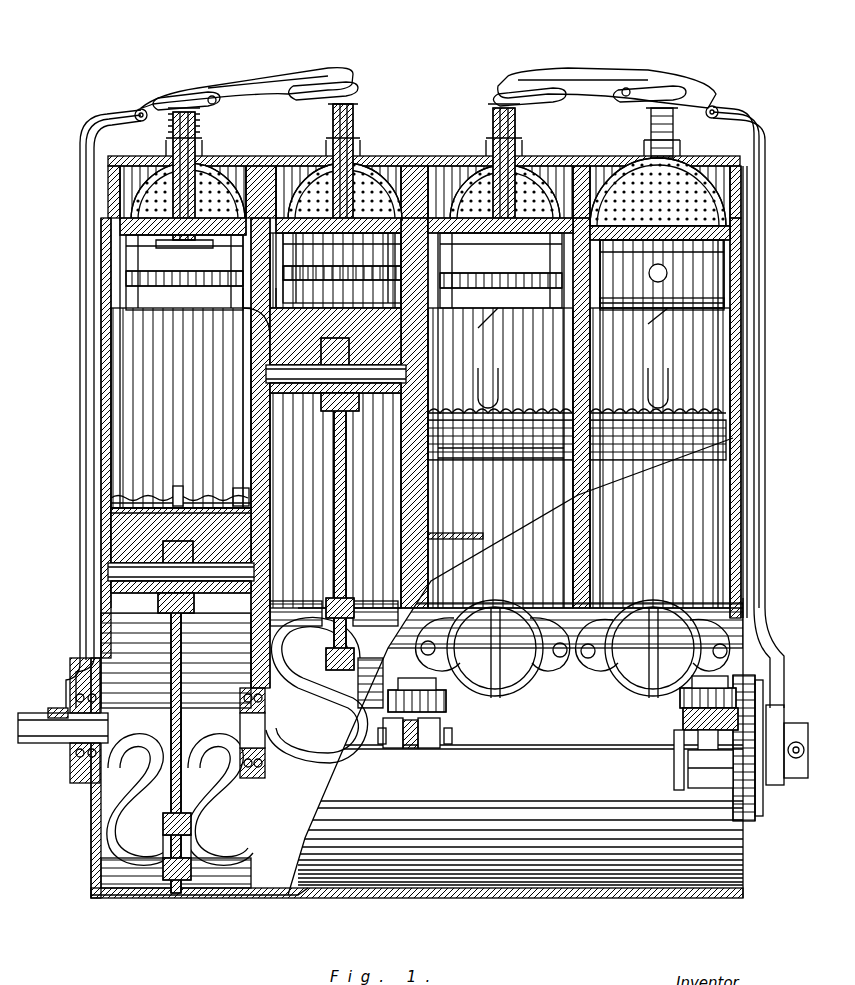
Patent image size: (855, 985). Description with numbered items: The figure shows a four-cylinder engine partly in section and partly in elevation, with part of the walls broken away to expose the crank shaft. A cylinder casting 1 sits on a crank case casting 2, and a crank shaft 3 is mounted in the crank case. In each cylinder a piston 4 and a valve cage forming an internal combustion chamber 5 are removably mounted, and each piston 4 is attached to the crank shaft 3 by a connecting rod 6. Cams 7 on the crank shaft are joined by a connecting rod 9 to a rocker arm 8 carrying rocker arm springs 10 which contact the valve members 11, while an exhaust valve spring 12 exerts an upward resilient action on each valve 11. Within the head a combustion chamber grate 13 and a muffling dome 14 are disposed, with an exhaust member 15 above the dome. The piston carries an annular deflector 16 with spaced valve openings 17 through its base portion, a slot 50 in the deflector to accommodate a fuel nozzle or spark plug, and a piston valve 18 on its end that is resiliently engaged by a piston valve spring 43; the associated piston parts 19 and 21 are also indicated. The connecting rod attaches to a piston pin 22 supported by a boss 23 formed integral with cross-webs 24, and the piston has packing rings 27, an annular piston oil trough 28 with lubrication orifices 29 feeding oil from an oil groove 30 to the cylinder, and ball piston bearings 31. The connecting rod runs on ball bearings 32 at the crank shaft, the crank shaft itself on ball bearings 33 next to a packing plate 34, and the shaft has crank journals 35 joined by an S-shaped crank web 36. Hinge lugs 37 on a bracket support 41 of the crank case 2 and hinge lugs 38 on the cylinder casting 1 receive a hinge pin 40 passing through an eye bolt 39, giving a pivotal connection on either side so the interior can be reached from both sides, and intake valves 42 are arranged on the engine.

The cylinder casting 1 is at (93, 334).
The crank case casting 2 is at (178, 78).
The crank shaft 3 is at (372, 640).
The piston 4 is at (200, 392).
The internal combustion chamber 5 is at (182, 282).
The connecting rod 6 is at (175, 606).
The cam 7 is at (30, 740).
The rocker arm 8 is at (222, 68).
The connecting rod 9 is at (72, 374).
The rocker arm spring 10 is at (338, 78).
The valve member 11 is at (172, 236).
The exhaust valve spring 12 is at (163, 122).
The combustion chamber grate 13 is at (240, 292).
The muffling dome 14 is at (440, 160).
The exhaust member 15 is at (300, 158).
The annular deflector 16 is at (243, 308).
The valve opening 17 is at (103, 500).
The piston valve 18 is at (238, 380).
The plate 19 is at (103, 505).
The packing ring 21 is at (100, 490).
The piston pin 22 is at (258, 366).
The boss 23 is at (262, 380).
The cross-web 24 is at (262, 330).
The packing ring 27 is at (462, 440).
The annular piston oil trough 28 is at (232, 480).
The lubrication orifice 29 is at (440, 526).
The oil groove 30 is at (460, 520).
The ball piston bearing 31 is at (150, 595).
The ball bearing 32 is at (346, 600).
The ball bearing 33 is at (258, 752).
The packing plate 34 is at (45, 660).
The crank journal 35 is at (25, 705).
The crank web 36 is at (275, 752).
The hinge lug 37 is at (376, 742).
The hinge lug 38 is at (440, 708).
The eye bolt 39 is at (404, 745).
The hinge pin 40 is at (668, 724).
The bracket support 41 is at (680, 782).
The intake valve 42 is at (515, 670).
The piston valve spring 43 is at (150, 498).
The slot 50 is at (490, 362).